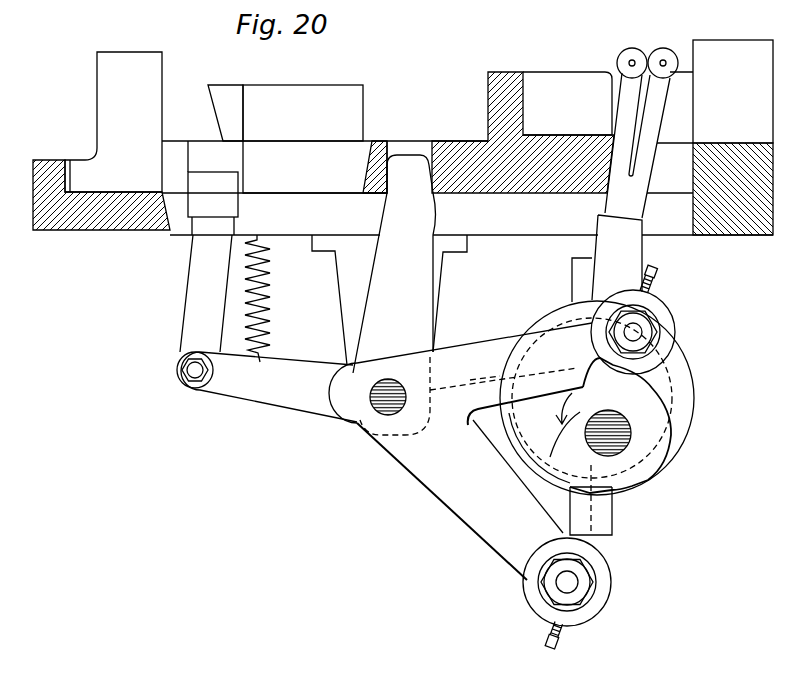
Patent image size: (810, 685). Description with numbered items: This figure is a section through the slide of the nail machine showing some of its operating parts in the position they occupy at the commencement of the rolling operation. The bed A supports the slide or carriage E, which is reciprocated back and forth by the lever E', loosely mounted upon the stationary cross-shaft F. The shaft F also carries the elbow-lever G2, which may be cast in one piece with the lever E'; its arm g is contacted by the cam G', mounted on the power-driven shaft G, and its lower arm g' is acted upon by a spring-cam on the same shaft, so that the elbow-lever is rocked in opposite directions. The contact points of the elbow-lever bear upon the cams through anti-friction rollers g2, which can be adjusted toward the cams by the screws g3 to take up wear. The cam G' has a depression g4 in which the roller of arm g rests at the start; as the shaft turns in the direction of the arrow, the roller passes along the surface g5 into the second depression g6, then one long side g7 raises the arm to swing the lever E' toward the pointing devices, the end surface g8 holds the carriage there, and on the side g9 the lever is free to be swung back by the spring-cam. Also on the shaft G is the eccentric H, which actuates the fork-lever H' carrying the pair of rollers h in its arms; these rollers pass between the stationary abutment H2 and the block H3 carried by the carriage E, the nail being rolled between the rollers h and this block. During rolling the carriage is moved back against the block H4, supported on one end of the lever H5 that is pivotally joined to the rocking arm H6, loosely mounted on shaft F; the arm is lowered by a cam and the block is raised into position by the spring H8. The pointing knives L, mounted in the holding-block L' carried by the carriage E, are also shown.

The knives L is at (225, 113).
The holding-block L' is at (303, 113).
The slide or carriage E is at (428, 132).
The lever E' is at (394, 264).
The bed A is at (380, 253).
The block H4 is at (213, 188).
The lever H5 is at (206, 293).
The rocking arm H6 is at (267, 387).
The spring H8 is at (270, 300).
The fork-lever H' is at (636, 186).
The stationary abutment H2 is at (670, 118).
The abutment or block H3 is at (567, 103).
The rollers h is at (664, 48).
The anti-friction rollers g2 is at (673, 328).
The screws g3 is at (656, 292).
The eccentric H is at (610, 396).
The depression g4 is at (646, 386).
The surface g5 is at (668, 428).
The arm g is at (551, 360).
The side g9 is at (597, 361).
The power-driven shaft G is at (646, 435).
The cam G' is at (610, 425).
The depression g6 is at (633, 486).
The long side g7 is at (528, 452).
The lower arm g' is at (460, 500).
The end surface g8 is at (505, 392).
The elbow-lever G2 is at (460, 379).
The stationary cross-shaft F is at (385, 400).